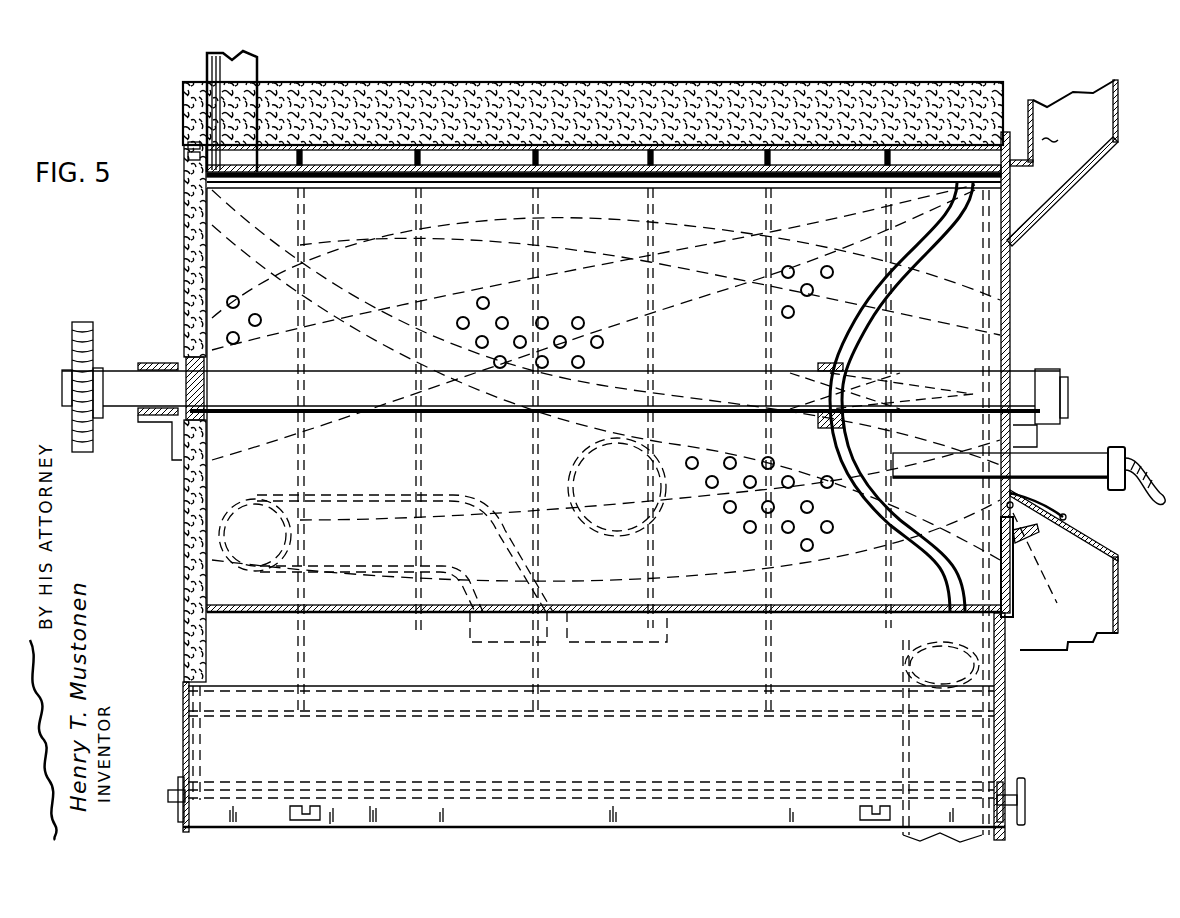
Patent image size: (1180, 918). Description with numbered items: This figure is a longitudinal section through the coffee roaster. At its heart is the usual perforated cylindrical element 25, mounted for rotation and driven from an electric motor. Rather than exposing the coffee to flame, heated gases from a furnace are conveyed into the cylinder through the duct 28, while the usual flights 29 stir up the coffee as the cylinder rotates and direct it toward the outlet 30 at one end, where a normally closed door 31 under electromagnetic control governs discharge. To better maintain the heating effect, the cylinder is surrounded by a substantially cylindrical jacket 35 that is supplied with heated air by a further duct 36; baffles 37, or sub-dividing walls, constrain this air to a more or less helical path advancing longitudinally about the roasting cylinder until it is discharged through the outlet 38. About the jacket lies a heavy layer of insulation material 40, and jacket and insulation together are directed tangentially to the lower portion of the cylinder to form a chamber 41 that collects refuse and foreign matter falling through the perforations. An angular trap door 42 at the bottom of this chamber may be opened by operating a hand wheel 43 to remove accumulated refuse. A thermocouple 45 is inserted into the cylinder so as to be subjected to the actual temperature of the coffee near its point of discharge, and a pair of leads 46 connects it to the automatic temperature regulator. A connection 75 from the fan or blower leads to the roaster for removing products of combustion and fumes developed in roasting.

The connection 75 is at (213, 72).
The insulation material 40 is at (490, 94).
The cylindrical jacket 35 is at (492, 158).
The baffles 37 is at (415, 200).
The flights 29 is at (637, 250).
The duct 36 is at (446, 497).
The duct 28 is at (567, 485).
The perforated cylindrical element 25 is at (807, 607).
The chamber 41 is at (581, 755).
The angular trap door 42 is at (564, 819).
The outlet 38 is at (984, 743).
The hand wheel 43 is at (1022, 792).
The thermocouple 45 is at (1063, 459).
The leads 46 is at (1137, 467).
The door 31 is at (1013, 593).
The outlet 30 is at (1087, 630).